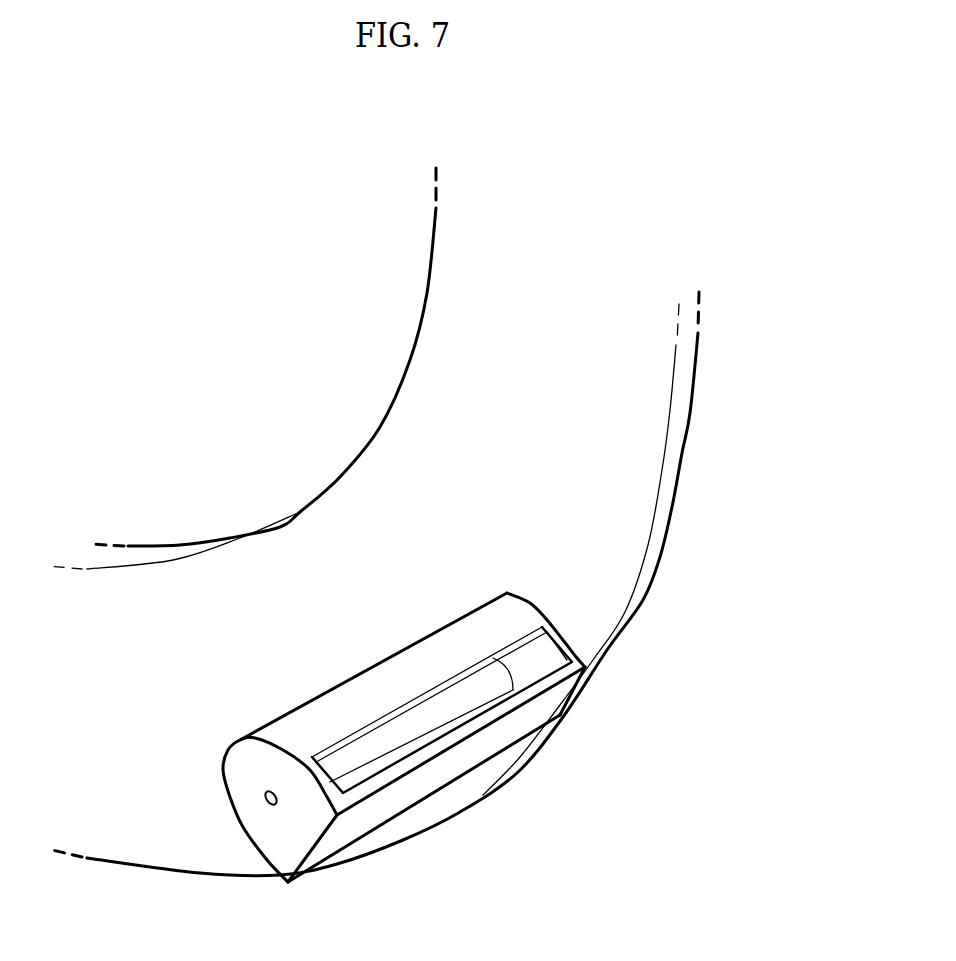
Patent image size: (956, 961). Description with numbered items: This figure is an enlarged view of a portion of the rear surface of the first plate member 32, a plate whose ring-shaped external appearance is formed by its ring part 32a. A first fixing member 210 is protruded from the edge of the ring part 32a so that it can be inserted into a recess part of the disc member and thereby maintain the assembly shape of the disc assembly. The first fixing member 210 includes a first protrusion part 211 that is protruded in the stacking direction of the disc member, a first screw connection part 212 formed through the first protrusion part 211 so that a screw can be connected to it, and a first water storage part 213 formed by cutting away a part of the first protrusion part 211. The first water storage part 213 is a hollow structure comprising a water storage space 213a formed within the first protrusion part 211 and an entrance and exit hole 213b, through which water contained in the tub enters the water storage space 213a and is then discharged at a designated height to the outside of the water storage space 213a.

The first plate member 32 is at (676, 454).
The ring part 32a is at (628, 510).
The first fixing member 210 is at (453, 795).
The first protrusion part 211 is at (380, 818).
The first screw connection part 212 is at (263, 800).
The first water storage part 213 is at (767, 632).
The water storage space 213a is at (445, 702).
The entrance and exit hole 213b is at (541, 631).